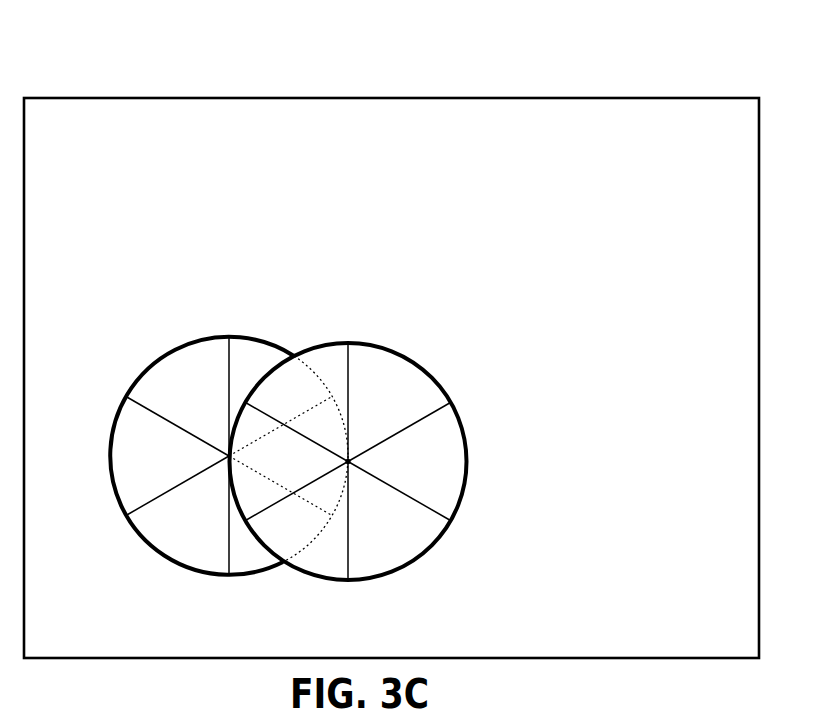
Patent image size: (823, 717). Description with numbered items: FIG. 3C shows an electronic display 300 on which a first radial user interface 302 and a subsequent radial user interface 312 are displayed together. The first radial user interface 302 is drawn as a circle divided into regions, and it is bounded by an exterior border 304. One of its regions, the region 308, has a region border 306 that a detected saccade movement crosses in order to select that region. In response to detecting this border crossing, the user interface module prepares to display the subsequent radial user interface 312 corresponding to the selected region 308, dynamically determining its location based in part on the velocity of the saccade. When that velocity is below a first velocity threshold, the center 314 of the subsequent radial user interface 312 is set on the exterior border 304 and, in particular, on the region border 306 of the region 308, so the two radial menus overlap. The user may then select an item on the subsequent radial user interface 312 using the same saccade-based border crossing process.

The electronic display 300 is at (627, 98).
The first radial user interface 302 is at (240, 320).
The exterior border 304 is at (312, 360).
The region border 306 is at (343, 492).
The region 308 is at (343, 427).
The subsequent radial user interface 312 is at (427, 356).
The center 314 is at (348, 462).